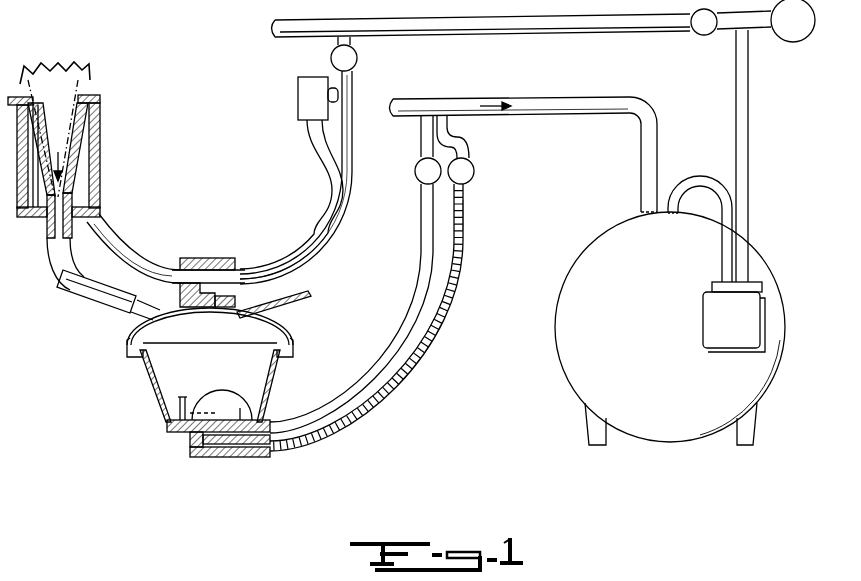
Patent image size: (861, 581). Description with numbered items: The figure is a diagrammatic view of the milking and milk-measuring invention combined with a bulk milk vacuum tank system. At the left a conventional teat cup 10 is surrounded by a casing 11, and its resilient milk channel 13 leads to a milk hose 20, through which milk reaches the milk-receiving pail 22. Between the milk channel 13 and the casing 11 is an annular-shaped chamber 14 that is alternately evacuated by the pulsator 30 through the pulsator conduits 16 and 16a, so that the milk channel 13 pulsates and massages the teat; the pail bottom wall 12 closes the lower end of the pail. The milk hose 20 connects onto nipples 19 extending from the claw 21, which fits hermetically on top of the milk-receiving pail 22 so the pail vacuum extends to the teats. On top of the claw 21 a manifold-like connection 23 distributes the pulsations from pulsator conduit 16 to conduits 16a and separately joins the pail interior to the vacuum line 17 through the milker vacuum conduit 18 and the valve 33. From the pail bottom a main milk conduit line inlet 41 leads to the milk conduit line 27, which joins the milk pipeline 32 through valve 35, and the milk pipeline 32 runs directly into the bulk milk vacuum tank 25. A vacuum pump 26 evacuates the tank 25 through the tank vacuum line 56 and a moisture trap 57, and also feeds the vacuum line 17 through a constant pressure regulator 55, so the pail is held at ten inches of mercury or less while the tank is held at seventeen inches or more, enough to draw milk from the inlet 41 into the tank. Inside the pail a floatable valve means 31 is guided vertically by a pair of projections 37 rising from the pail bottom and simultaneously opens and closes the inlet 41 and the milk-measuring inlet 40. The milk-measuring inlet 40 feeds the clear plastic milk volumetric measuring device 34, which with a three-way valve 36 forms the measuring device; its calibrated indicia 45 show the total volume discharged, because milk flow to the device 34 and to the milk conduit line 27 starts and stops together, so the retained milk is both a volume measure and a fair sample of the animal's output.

The teat cup 10 is at (92, 79).
The casing 11 is at (95, 120).
The housing bottom wall 12 is at (92, 208).
The milk channel 13 is at (63, 196).
The annular-shaped chamber 14 is at (84, 150).
The pulsator conduit 16 is at (310, 142).
The pulsator conduit 16a is at (112, 233).
The vacuum line 17 is at (535, 33).
The milker vacuum conduit 18 is at (352, 130).
The nipple 19 is at (135, 318).
The milk hose 20 is at (58, 283).
The claw 21 is at (292, 335).
The milk-receiving pail 22 is at (276, 368).
The manifold-like connection 23 is at (232, 249).
The bulk milk vacuum tank 25 is at (625, 326).
The vacuum pump 26 is at (815, 16).
The milk conduit line 27 is at (412, 325).
The pulsator 30 is at (302, 107).
The floatable valve means 31 is at (257, 397).
The milk pipeline 32 is at (526, 98).
The valve 33 is at (357, 63).
The milk volumetric measuring device 34 is at (470, 224).
The valve 35 is at (415, 171).
The three-way valve 36 is at (474, 171).
The projection 37 is at (162, 405).
The milk-measuring inlet 40 is at (212, 456).
The main milk conduit line inlet 41 is at (192, 455).
The indicia 45 is at (480, 285).
The constant pressure regulator 55 is at (699, 36).
The tank vacuum line 56 is at (748, 147).
The moisture trap 57 is at (710, 325).